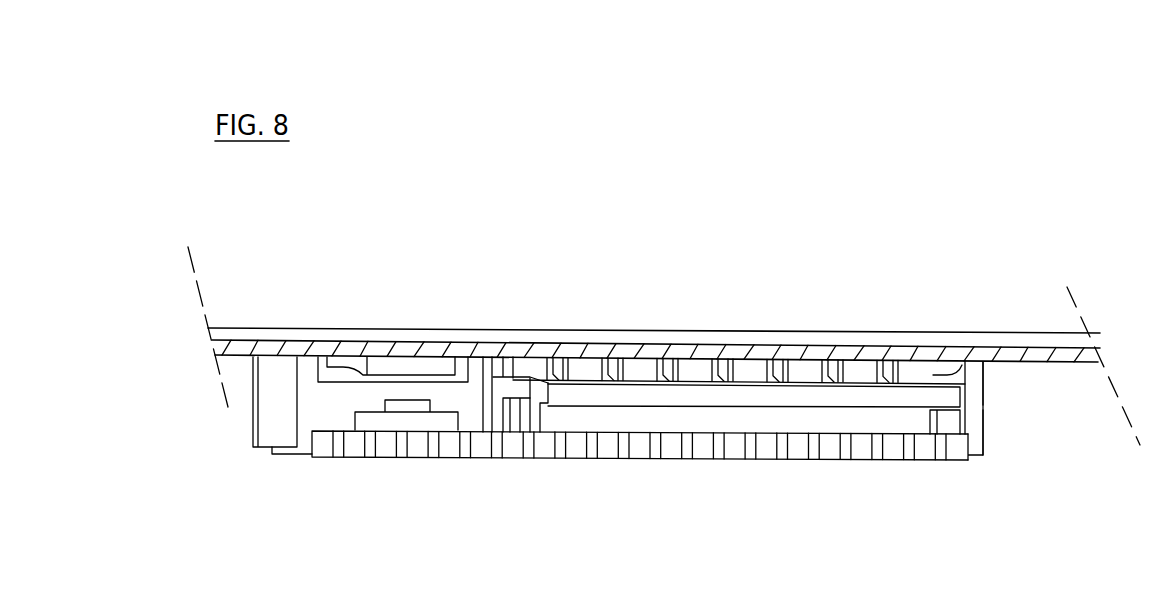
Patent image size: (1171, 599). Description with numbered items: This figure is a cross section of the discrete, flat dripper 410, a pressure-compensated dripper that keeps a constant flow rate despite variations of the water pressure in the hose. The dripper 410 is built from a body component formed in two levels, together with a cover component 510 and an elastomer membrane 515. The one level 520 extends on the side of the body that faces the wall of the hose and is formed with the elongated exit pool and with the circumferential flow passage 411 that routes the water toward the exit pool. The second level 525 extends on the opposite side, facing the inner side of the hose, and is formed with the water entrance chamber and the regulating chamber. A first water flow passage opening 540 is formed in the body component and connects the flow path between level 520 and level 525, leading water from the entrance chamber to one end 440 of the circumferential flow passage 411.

The dripper 410 is at (618, 485).
The flow passage 411 is at (757, 368).
The one end of circumferential flow passage 440 is at (653, 368).
The cover component 510 is at (542, 447).
The elastomer membrane 515 is at (396, 424).
The first level 520 is at (995, 364).
The second level 525 is at (995, 414).
The first water flow passage opening 540 is at (520, 394).